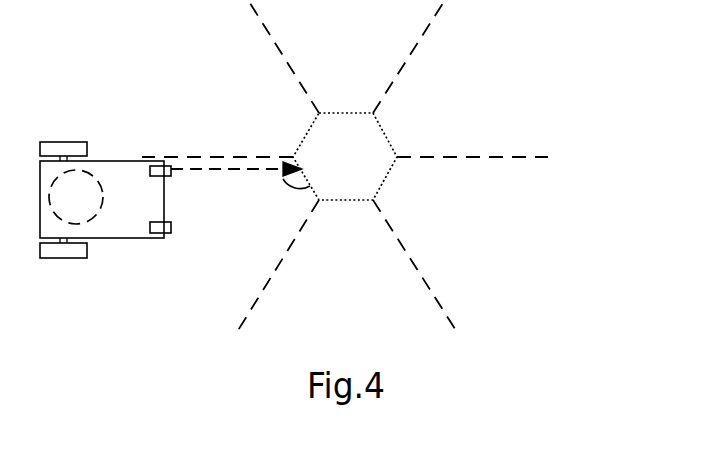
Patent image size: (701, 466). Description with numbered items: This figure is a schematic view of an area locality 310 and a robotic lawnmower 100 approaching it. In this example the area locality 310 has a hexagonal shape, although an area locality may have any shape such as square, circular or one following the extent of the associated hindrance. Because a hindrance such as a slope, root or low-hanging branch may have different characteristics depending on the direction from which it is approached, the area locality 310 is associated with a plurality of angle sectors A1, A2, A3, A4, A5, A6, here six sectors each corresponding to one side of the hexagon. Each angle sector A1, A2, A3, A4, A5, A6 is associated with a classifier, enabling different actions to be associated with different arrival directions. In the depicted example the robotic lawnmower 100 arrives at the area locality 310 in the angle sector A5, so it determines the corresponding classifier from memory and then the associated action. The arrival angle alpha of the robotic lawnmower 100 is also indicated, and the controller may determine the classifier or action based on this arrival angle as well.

The robotic lawnmower 100 is at (105, 200).
The area locality 310 is at (345, 156).
The angle sector A1 is at (314, 56).
The angle sector A2 is at (432, 57).
The angle sector A3 is at (472, 193).
The angle sector A4 is at (386, 266).
The angle sector A5 is at (250, 266).
The angle sector A6 is at (217, 121).